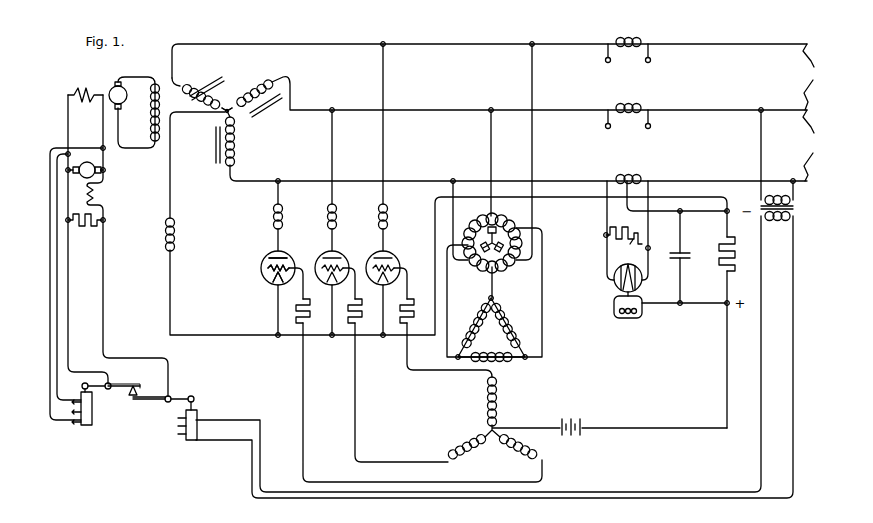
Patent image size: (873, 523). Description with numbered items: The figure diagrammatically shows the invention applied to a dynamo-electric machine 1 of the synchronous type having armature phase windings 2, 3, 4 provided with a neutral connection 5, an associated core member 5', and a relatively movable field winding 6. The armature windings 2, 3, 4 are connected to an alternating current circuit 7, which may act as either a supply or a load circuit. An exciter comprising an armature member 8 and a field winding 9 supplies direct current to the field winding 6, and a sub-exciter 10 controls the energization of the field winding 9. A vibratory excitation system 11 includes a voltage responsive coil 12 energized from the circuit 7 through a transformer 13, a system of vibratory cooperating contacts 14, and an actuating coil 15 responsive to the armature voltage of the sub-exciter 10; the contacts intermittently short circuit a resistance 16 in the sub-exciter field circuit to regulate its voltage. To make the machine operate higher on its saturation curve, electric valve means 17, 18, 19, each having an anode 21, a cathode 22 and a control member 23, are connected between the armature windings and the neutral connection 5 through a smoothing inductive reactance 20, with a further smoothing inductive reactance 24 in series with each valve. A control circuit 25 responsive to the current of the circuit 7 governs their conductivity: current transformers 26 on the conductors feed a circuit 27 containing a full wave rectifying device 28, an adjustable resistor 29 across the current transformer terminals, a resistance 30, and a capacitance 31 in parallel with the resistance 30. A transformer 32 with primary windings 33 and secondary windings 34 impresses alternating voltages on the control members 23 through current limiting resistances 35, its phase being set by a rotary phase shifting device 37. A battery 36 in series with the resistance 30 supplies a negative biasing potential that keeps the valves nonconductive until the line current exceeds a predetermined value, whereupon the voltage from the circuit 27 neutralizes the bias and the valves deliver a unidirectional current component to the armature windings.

The dynamo-electric machine 1 is at (197, 148).
The armature phase winding 2 is at (188, 98).
The armature phase winding 3 is at (260, 92).
The armature phase winding 4 is at (238, 143).
The neutral connection 5 is at (214, 119).
The core member 5' is at (236, 121).
The field winding 6 is at (151, 113).
The alternating current circuit 7 is at (811, 112).
The armature member 8 is at (112, 88).
The field winding 9 is at (88, 99).
The sub-exciter 10 is at (113, 179).
The excitation system 11 is at (137, 437).
The voltage responsive coil 12 is at (189, 424).
The transformer 13 is at (797, 208).
The vibratory cooperating contacts 14 is at (142, 387).
The actuating coil 15 is at (93, 408).
The resistance 16 is at (89, 226).
The electric valve means 17 is at (268, 253).
The electric valve means 18 is at (322, 253).
The electric valve means 19 is at (373, 253).
The smoothing inductive reactance 20 is at (165, 236).
The anode 21 is at (268, 260).
The cathode 22 is at (273, 282).
The control member 23 is at (267, 270).
The smoothing inductive reactance 24 is at (273, 215).
The control circuit 25 is at (622, 379).
The current transformer 26 is at (626, 36).
The circuit 27 is at (689, 284).
The full wave rectifying device 28 is at (613, 285).
The adjustable resistor 29 is at (628, 236).
The resistance 30 is at (722, 238).
The capacitance 31 is at (673, 253).
The transformer 32 is at (508, 390).
The primary windings 33 is at (487, 351).
The secondary windings 34 is at (481, 430).
The current limiting resistances 35 is at (307, 320).
The battery 36 is at (568, 433).
The rotary phase shifting device 37 is at (503, 213).